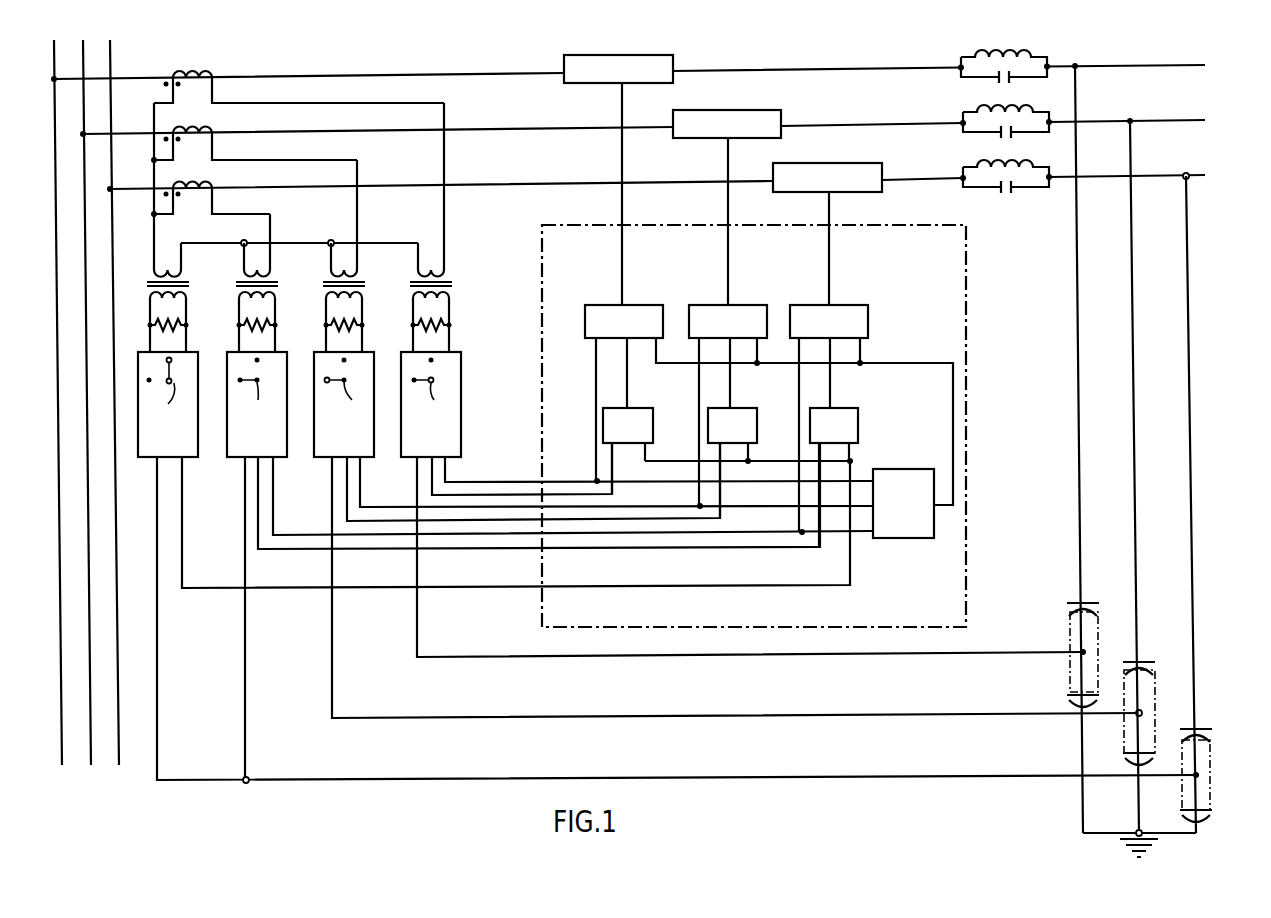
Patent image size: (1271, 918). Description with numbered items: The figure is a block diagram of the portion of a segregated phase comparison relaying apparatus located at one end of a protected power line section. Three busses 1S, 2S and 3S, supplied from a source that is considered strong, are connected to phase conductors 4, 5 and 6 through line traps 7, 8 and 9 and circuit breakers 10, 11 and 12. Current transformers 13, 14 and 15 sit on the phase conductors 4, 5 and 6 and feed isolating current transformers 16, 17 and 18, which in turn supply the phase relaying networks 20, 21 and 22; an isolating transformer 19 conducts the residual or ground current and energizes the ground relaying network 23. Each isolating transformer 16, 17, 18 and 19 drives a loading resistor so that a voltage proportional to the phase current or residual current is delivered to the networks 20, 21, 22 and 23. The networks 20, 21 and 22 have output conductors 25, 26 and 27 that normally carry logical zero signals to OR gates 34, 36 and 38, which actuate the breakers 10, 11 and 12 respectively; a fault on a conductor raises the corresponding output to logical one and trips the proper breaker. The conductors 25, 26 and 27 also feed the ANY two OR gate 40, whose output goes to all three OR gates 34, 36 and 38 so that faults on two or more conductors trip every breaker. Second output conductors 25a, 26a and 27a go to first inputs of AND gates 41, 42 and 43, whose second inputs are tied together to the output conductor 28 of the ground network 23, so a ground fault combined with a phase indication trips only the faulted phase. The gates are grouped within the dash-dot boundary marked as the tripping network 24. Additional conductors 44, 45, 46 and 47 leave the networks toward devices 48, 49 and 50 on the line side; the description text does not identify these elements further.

The bus 1S is at (55, 206).
The bus 2S is at (84, 246).
The bus 3S is at (113, 277).
The phase conductor 4 is at (1132, 59).
The phase conductor 5 is at (1162, 116).
The phase conductor 6 is at (1165, 171).
The line trap 7 is at (961, 74).
The line trap 8 is at (963, 130).
The line trap 9 is at (963, 185).
The circuit breaker 10 is at (670, 55).
The circuit breaker 11 is at (776, 110).
The circuit breaker 12 is at (874, 163).
The current transformer 13 is at (211, 67).
The current transformer 14 is at (214, 131).
The current transformer 15 is at (211, 188).
The isolating current transformer 16 is at (450, 284).
The isolating current transformer 17 is at (363, 284).
The isolating current transformer 18 is at (275, 284).
The isolating transformer 19 is at (188, 284).
The phase relaying network 20 is at (461, 361).
The phase relaying network 21 is at (374, 361).
The phase relaying network 22 is at (287, 361).
The ground relaying network 23 is at (198, 361).
The tripping network 24 is at (966, 238).
The output conductor 25 is at (445, 472).
The output conductor 25a is at (432, 490).
The output conductor 26 is at (360, 478).
The output conductor 26a is at (347, 505).
The output conductor 27 is at (273, 493).
The output conductor 27a is at (258, 517).
The output conductor 28 is at (182, 493).
The OR gate 34 is at (648, 305).
The OR gate 36 is at (751, 305).
The OR gate 38 is at (853, 305).
The ANY "2" OR gate 40 is at (906, 469).
The AND gate 41 is at (646, 408).
The AND gate 42 is at (749, 408).
The AND gate 43 is at (852, 408).
The output lead 44 is at (417, 620).
The output lead 45 is at (332, 672).
The output lead 46 is at (246, 685).
The output lead 47 is at (158, 664).
The capacitive coupling device 48 is at (1070, 629).
The capacitive coupling device 49 is at (1155, 692).
The capacitive coupling device 50 is at (1209, 755).